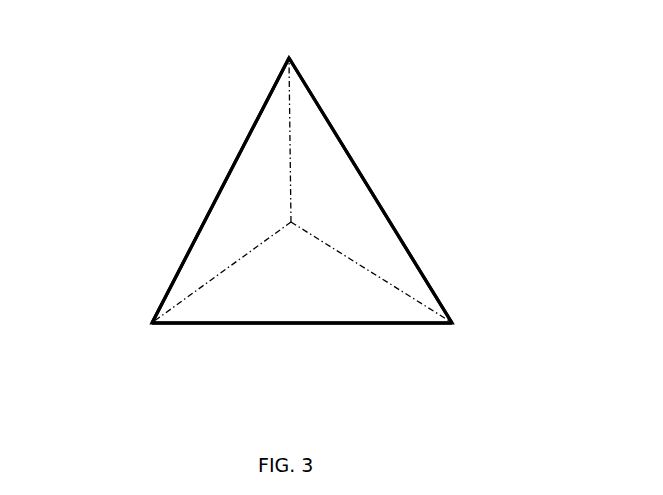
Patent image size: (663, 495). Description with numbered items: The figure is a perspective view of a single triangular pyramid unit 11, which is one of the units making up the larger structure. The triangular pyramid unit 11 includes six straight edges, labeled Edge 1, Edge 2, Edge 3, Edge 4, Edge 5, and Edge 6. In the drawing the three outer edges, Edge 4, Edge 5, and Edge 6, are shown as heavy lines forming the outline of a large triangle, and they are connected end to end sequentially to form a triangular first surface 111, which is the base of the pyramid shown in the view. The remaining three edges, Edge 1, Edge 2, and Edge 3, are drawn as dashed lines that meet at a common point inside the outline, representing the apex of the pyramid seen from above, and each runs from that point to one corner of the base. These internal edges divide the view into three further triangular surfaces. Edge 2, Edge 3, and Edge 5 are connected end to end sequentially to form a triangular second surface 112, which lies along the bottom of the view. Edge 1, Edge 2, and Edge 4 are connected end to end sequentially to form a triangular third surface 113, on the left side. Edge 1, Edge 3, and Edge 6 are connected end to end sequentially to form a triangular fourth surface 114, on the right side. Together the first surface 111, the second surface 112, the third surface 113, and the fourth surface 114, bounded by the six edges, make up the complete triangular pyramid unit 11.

The triangular pyramid unit 11 is at (225, 100).
The first surface 111 is at (235, 307).
The second surface 112 is at (302, 272).
The third surface 113 is at (222, 191).
The fourth surface 114 is at (370, 191).
The edge Edge 1 is at (290, 125).
The edge Edge 2 is at (217, 277).
The edge Edge 3 is at (378, 275).
The edge Edge 4 is at (225, 183).
The edge Edge 5 is at (310, 323).
The edge Edge 6 is at (365, 183).